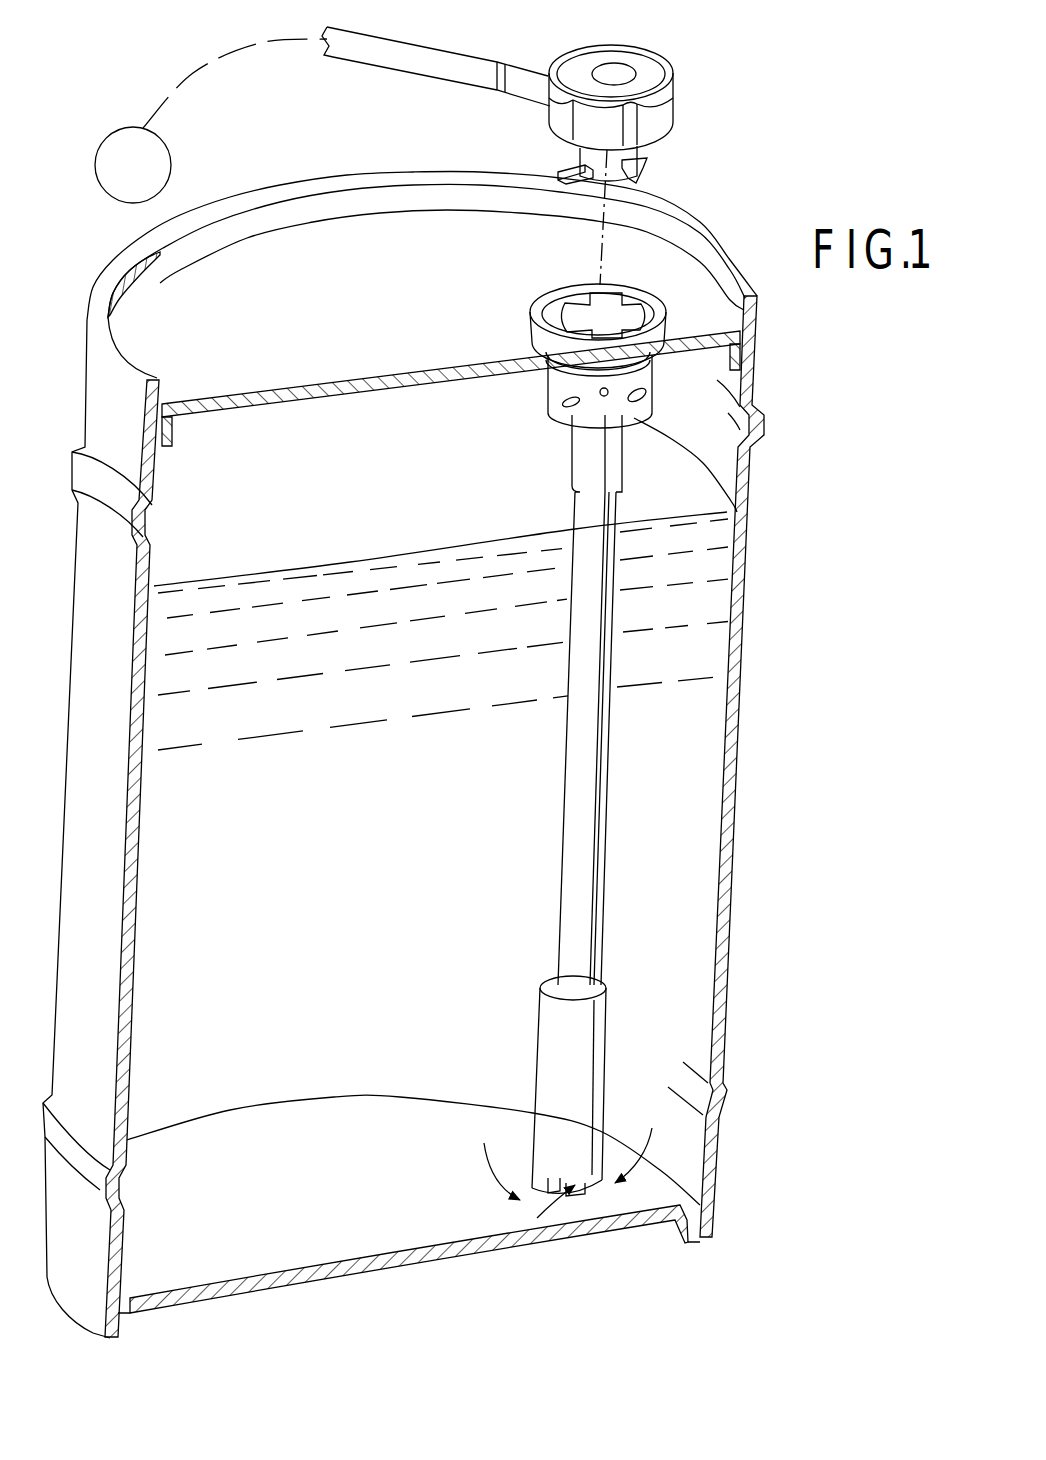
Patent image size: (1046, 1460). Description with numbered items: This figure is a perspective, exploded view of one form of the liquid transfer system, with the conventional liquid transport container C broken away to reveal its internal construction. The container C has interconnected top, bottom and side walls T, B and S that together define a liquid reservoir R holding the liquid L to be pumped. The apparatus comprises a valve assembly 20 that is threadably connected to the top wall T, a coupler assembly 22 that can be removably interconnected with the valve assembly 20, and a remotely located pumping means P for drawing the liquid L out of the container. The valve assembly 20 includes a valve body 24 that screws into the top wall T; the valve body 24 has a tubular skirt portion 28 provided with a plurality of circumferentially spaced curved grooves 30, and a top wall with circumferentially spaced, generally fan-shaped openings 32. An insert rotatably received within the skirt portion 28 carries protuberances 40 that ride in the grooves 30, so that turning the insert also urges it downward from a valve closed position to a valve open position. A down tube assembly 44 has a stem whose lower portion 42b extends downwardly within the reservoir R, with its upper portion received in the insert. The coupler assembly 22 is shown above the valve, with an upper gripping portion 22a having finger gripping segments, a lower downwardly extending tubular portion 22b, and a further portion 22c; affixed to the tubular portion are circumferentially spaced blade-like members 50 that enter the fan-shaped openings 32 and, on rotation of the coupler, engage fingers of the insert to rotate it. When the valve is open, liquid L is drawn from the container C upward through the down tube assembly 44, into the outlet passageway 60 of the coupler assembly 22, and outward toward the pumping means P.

The valve assembly 20 is at (585, 684).
The coupler assembly 22 is at (544, 115).
The upper gripping portion 22a is at (647, 62).
The lower tubular portion 22b is at (605, 128).
The cap stem 22c is at (627, 155).
The valve body 24 is at (565, 307).
The skirt portion 28 is at (585, 416).
The curved grooves 30 is at (648, 390).
The openings 32 is at (565, 303).
The protuberances 40 is at (603, 397).
The lower portion of stem 42b is at (590, 477).
The down tube assembly 44 is at (630, 453).
The blade-like members 50 is at (567, 173).
The outlet passageway 60 is at (353, 47).
The pumping means P is at (150, 160).
The top wall T is at (451, 408).
The liquid L is at (288, 570).
The liquid transport container C is at (434, 754).
The side walls S is at (726, 783).
The liquid reservoir R is at (366, 801).
The bottom wall B is at (354, 1274).